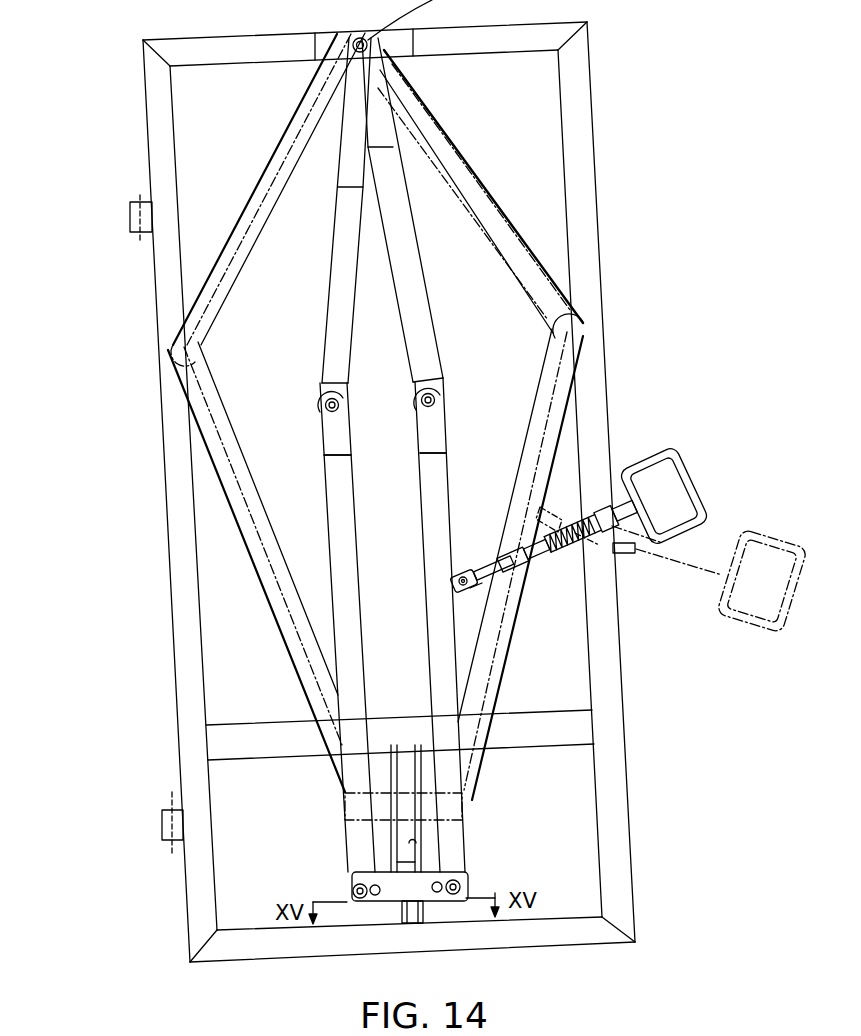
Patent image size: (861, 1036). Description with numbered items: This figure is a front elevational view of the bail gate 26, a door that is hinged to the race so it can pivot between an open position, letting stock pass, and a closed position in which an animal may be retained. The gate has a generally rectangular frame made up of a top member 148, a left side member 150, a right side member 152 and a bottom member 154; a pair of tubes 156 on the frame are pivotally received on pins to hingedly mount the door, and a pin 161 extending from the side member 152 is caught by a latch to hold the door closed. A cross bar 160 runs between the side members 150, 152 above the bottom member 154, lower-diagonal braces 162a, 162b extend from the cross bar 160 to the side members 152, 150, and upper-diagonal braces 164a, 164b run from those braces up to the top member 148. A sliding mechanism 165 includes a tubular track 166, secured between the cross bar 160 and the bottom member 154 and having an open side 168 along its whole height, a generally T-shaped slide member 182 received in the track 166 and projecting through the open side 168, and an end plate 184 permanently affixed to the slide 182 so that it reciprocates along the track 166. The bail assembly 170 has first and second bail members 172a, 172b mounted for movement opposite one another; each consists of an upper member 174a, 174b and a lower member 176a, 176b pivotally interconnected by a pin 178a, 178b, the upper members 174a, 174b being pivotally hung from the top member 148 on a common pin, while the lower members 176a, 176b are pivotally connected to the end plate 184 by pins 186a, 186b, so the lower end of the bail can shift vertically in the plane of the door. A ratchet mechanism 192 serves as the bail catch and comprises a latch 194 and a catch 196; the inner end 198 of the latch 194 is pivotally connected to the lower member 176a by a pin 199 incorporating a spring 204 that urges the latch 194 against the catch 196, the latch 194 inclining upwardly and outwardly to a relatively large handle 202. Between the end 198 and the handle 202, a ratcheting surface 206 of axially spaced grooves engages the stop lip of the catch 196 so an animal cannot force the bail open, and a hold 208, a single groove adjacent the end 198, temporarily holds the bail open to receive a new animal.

The bail gate 26 is at (100, 460).
The top member 148 is at (205, 45).
The left side member 150 is at (172, 519).
The right side member 152 is at (603, 381).
The bottom member 154 is at (535, 937).
The tubes 156 is at (133, 217).
The cross bar 160 is at (268, 742).
The pin 161 is at (709, 579).
The lower-diagonal brace 162a is at (527, 420).
The lower-diagonal brace 162b is at (243, 450).
The upper-diagonal brace 164a is at (467, 152).
The upper-diagonal brace 164b is at (284, 160).
The sliding mechanism 165 is at (322, 817).
The track 166 is at (408, 829).
The open side 168 is at (412, 842).
The bail assembly 170 is at (293, 338).
The bail member 172a is at (447, 348).
The bail member 172b is at (310, 355).
The upper member 174a is at (416, 277).
The upper member 174b is at (334, 286).
The lower member 176a is at (438, 517).
The lower member 176b is at (336, 498).
The pin 178a is at (436, 401).
The pin 178b is at (323, 405).
The slide member 182 is at (411, 912).
The end plate 184 is at (383, 896).
The pin 186a is at (461, 887).
The pin 186b is at (352, 890).
The ratchet mechanism 192 is at (607, 562).
The latch 194 is at (541, 570).
The catch 196 is at (612, 560).
The end 198 is at (468, 572).
The pin 199 is at (452, 589).
The handle 202 is at (690, 458).
The spring 204 is at (513, 600).
The ratcheting surface 206 is at (584, 569).
The hold 208 is at (493, 583).